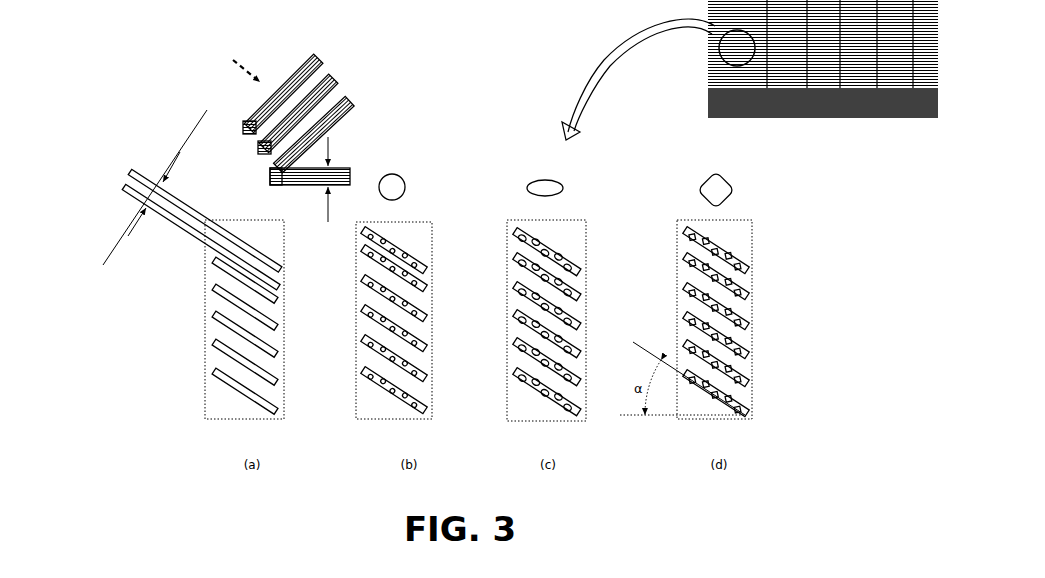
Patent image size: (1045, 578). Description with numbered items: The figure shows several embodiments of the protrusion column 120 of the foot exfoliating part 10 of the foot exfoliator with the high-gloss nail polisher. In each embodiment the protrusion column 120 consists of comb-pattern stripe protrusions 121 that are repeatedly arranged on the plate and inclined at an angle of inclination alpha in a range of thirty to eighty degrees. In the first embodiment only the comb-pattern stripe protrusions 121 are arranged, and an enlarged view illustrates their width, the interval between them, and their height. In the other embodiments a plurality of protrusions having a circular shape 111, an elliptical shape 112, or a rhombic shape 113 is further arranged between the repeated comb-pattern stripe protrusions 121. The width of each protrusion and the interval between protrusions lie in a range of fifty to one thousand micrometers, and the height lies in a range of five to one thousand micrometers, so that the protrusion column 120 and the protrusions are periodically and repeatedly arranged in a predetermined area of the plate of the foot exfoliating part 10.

The foot exfoliating part 10 is at (30, 54).
The circular shape 111 is at (405, 195).
The elliptical shape 112 is at (563, 193).
The rhombic shape 113 is at (733, 198).
The protrusion column 120 is at (778, 117).
The comb-pattern stripe protrusions 121 is at (228, 323).